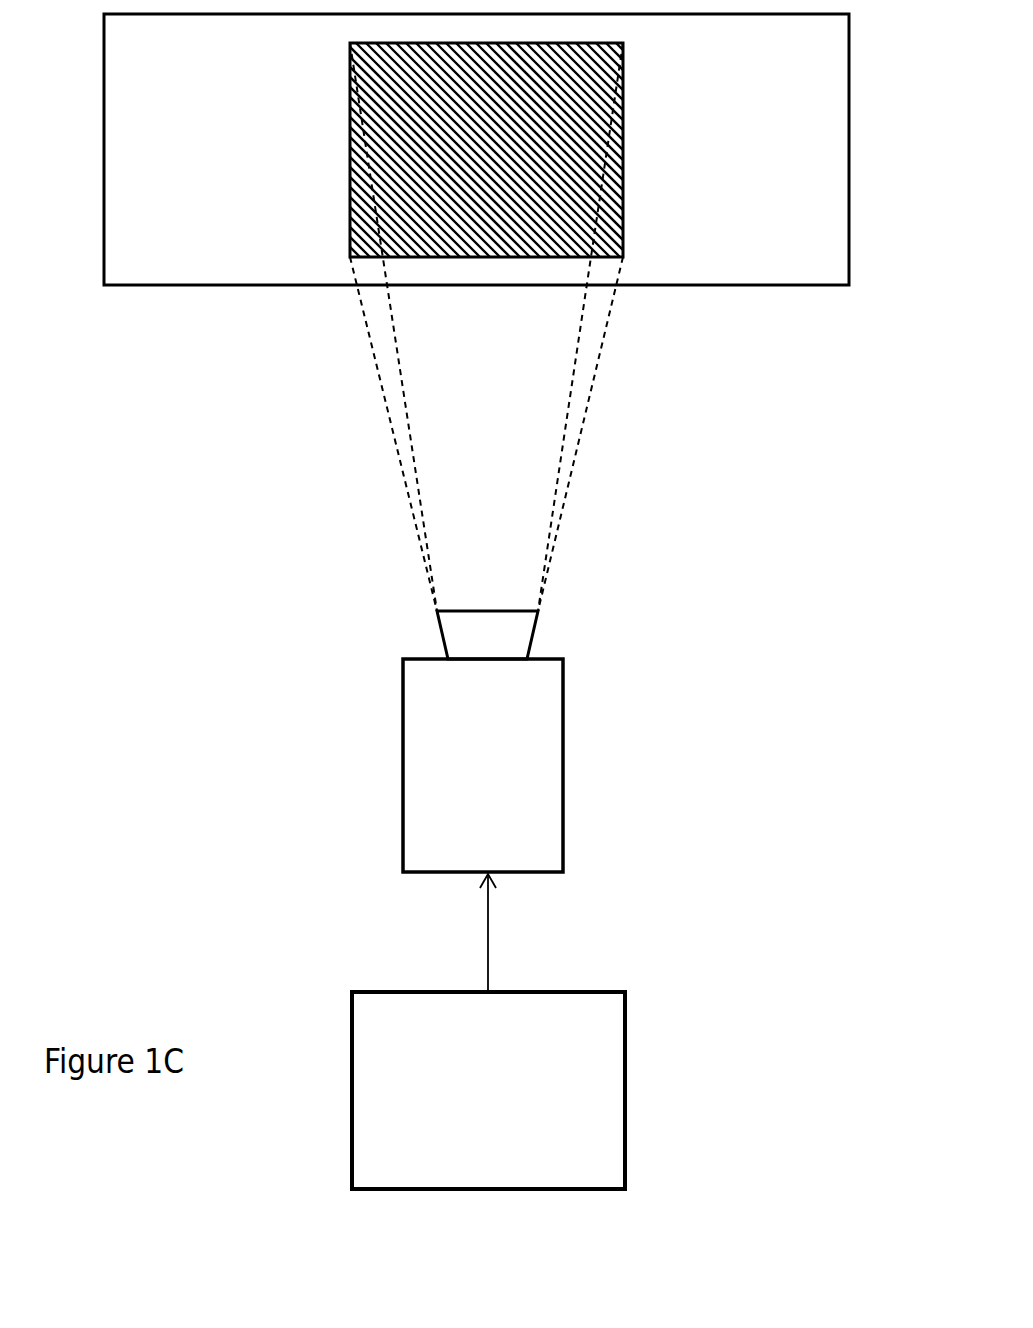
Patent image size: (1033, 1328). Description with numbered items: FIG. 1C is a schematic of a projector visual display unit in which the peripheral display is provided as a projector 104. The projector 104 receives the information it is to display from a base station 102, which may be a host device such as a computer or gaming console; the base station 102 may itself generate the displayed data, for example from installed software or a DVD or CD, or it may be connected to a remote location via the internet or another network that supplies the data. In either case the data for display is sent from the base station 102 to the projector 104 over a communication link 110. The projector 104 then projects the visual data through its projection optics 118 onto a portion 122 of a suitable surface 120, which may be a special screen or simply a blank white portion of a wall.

The base station 102 is at (625, 1088).
The projector 104 is at (564, 762).
The communication link 110 is at (488, 952).
The projection optics 118 is at (533, 628).
The surface 120 is at (729, 267).
The portion 122 is at (478, 158).